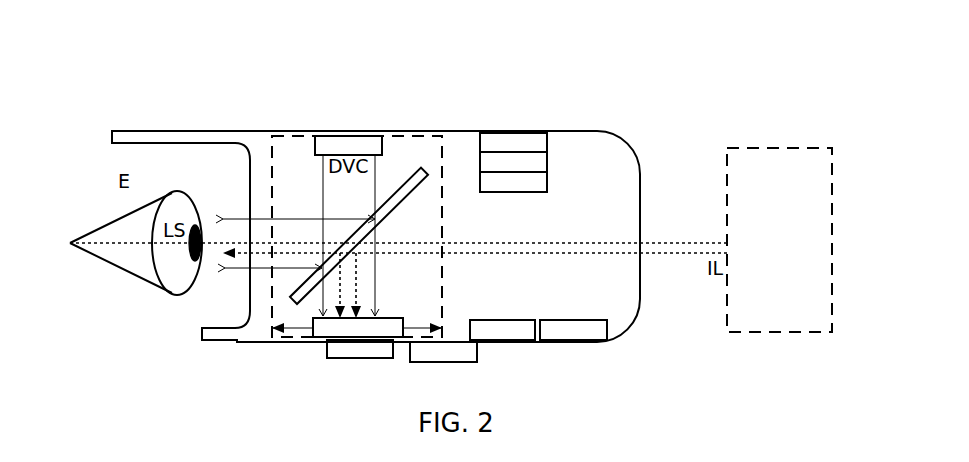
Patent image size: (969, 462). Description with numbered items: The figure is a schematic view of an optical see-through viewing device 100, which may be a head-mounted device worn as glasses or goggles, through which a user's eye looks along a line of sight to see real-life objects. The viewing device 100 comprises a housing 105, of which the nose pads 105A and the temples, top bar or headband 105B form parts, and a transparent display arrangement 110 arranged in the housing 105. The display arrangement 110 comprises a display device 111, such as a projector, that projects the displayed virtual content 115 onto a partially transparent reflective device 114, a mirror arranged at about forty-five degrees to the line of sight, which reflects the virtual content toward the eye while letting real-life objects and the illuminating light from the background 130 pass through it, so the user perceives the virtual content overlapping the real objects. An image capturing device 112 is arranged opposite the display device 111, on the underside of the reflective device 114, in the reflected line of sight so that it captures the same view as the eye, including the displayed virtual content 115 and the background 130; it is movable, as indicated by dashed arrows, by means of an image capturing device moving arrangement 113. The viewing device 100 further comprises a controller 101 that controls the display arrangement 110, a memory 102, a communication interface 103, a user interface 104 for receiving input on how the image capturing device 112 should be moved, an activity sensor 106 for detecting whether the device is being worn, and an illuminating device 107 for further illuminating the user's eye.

The optical see-through viewing device 100 is at (204, 99).
The housing 105 is at (287, 131).
The nose pads 105A is at (213, 343).
The temples, top bar or headband 105B is at (165, 141).
The transparent display arrangement 110 is at (410, 132).
The display device 111 is at (348, 146).
The image capturing device 112 is at (357, 327).
The image capturing device moving arrangement 113 is at (360, 349).
The partially transparent reflective device 114 is at (428, 177).
The content to be displayed 115 is at (349, 236).
The controller 101 is at (513, 143).
The memory 102 is at (513, 163).
The communication interface 103 is at (513, 183).
The user interface 104 is at (443, 352).
The activity sensor 106 is at (502, 330).
The illuminating device 107 is at (573, 330).
The background 130 is at (779, 240).